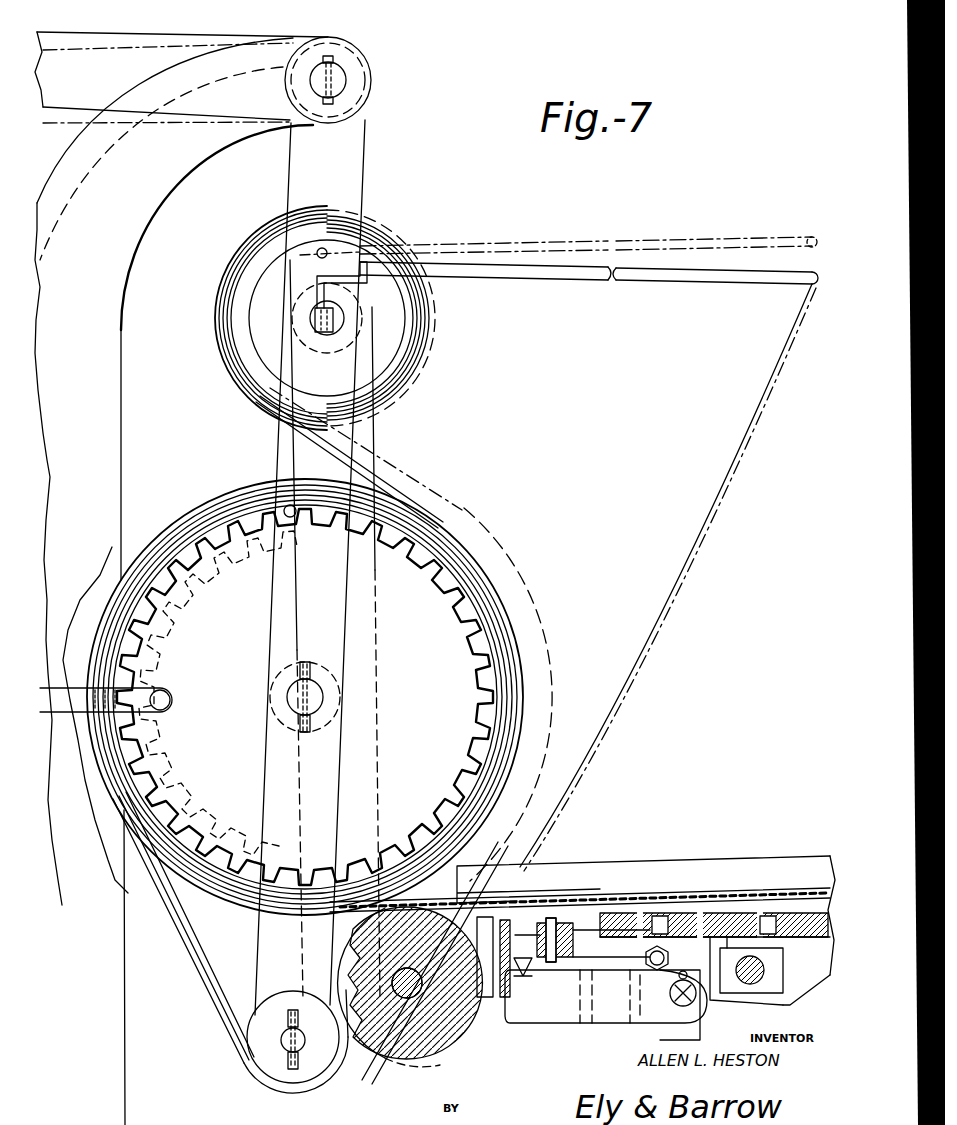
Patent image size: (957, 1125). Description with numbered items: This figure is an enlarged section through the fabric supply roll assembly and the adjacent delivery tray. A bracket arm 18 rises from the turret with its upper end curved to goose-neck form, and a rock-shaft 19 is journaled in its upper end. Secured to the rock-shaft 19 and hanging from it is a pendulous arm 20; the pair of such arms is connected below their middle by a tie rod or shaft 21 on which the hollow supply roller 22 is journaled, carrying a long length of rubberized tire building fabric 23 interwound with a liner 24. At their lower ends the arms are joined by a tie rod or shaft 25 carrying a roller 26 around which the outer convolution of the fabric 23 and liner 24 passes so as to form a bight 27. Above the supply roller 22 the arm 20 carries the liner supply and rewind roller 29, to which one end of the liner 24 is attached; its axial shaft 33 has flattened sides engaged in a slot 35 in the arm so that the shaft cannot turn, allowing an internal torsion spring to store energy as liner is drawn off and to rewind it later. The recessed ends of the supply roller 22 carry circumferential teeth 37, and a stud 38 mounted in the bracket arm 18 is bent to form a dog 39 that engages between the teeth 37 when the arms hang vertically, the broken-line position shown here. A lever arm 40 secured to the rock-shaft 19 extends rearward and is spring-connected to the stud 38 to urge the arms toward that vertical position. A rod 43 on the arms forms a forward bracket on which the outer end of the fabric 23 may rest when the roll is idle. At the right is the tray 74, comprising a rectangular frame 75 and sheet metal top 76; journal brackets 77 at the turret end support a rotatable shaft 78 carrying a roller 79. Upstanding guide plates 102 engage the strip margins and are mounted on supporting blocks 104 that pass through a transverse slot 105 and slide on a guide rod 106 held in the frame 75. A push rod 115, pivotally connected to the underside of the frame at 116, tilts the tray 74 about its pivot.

The bracket arm 18 is at (122, 453).
The rock-shaft 19 is at (346, 80).
The pendulous arm 20 is at (275, 453).
The tie rod or shaft 21 is at (326, 697).
The supply roller 22 is at (455, 650).
The tire building fabric 23 is at (165, 898).
The liner 24 is at (190, 928).
The tie rod or shaft 25 is at (277, 1052).
The roller 26 is at (246, 1034).
The bight 27 is at (200, 977).
The liner supply and rewind roller 29 is at (372, 335).
The axial shaft 33 is at (317, 317).
The slot 35 is at (315, 287).
The teeth 37 is at (182, 600).
The stud 38 is at (78, 662).
The dog 39 is at (172, 700).
The lever arm 40 is at (62, 100).
The rod 43 is at (688, 272).
The tray 74 is at (748, 856).
The rectangular frame 75 is at (828, 968).
The sheet metal top 76 is at (545, 920).
The journal bracket 77 is at (672, 958).
The shaft 78 is at (455, 1038).
The roller 79 is at (428, 1045).
The guide plate 102 is at (652, 868).
The supporting block 104 is at (733, 995).
The slot 105 is at (712, 915).
The guide rod 106 is at (762, 990).
The push rod 115 is at (668, 1040).
The pivot connection 116 is at (670, 988).